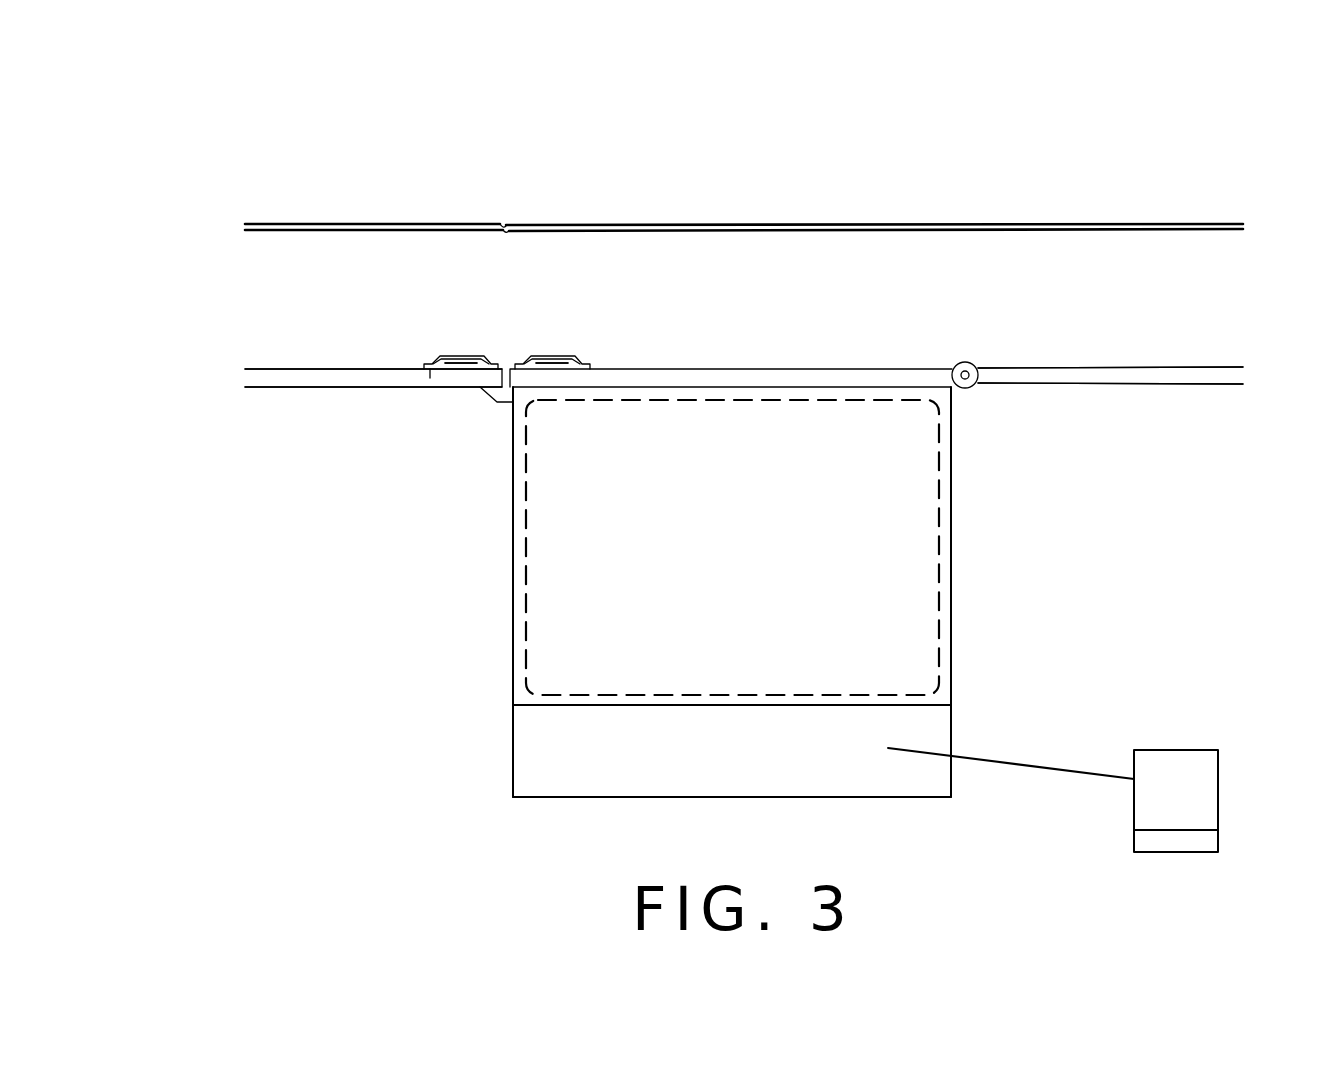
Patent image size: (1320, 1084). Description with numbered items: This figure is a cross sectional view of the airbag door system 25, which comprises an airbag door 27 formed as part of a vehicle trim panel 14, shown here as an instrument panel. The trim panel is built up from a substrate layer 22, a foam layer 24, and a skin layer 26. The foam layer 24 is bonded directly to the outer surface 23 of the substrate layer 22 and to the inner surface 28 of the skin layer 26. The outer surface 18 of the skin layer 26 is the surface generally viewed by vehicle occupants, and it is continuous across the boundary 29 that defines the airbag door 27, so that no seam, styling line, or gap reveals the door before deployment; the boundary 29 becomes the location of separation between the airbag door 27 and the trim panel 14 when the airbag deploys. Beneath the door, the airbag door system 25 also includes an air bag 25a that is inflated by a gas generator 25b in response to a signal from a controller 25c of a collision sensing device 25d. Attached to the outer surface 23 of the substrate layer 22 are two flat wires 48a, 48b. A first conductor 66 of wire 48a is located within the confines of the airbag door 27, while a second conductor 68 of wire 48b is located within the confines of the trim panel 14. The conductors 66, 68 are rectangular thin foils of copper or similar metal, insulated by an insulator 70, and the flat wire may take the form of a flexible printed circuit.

The trim panel 14 is at (360, 223).
The outer surface 18 is at (283, 223).
The boundary 29 is at (505, 223).
The airbag door 27 is at (672, 223).
The skin layer 26 is at (1222, 223).
The inner surface 28 is at (1200, 230).
The airbag door system 25 is at (970, 160).
The foam layer 24 is at (270, 297).
The substrate layer 22 is at (257, 378).
The outer surface 23 is at (1195, 367).
The wire 48b is at (462, 356).
The wire 48a is at (540, 357).
The insulator 70 is at (430, 370).
The second conductor 68 is at (462, 362).
The first conductor 66 is at (553, 365).
The air bag 25a is at (912, 532).
The gas generator 25b is at (938, 726).
The controller 25c is at (1208, 780).
The collision sensing device 25d is at (1218, 838).